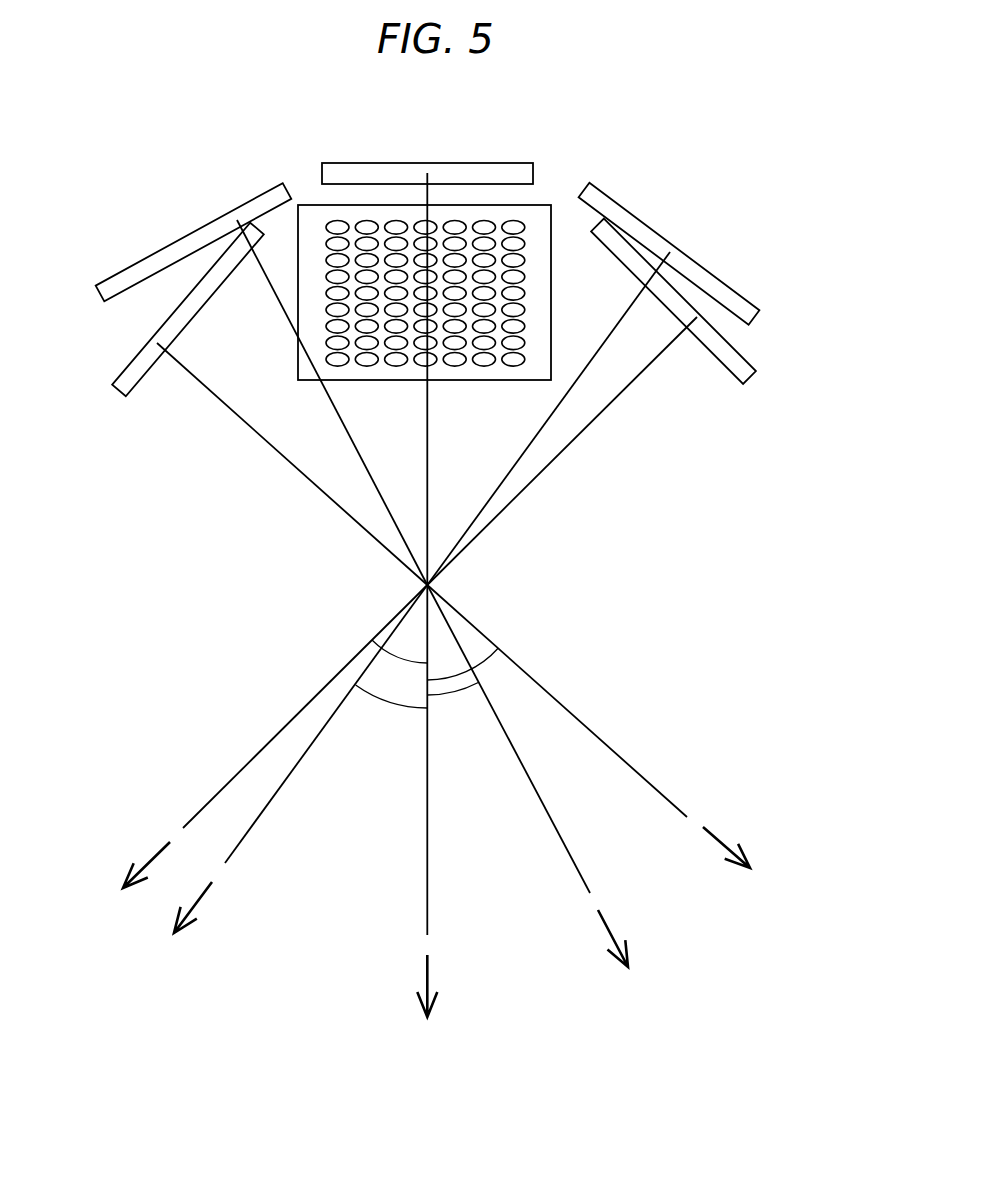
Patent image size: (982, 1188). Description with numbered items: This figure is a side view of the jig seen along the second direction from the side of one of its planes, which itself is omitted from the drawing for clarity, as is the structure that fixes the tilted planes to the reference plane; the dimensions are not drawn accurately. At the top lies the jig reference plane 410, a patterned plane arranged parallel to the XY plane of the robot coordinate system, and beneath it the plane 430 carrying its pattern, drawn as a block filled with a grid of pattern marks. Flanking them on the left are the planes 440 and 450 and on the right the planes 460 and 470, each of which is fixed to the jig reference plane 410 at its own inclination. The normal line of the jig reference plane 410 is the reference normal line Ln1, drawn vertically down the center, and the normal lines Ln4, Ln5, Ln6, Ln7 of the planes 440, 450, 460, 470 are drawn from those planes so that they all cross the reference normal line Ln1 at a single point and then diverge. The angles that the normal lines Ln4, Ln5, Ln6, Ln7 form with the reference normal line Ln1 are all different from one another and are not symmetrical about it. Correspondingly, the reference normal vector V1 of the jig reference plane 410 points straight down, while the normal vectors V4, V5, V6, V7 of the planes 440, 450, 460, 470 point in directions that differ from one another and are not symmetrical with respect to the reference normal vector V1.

The jig reference plane 410 is at (403, 163).
The plane 430 is at (548, 205).
The plane 440 is at (132, 363).
The plane 450 is at (172, 242).
The plane 460 is at (743, 355).
The plane 470 is at (733, 288).
The reference normal line Ln1 is at (427, 838).
The normal line Ln4 is at (616, 752).
The normal line Ln5 is at (533, 778).
The normal line Ln6 is at (271, 740).
The normal line Ln7 is at (298, 765).
The reference normal vector V1 is at (430, 980).
The normal vector V4 is at (715, 840).
The normal vector V5 is at (605, 927).
The normal vector V6 is at (148, 860).
The normal vector V7 is at (207, 893).